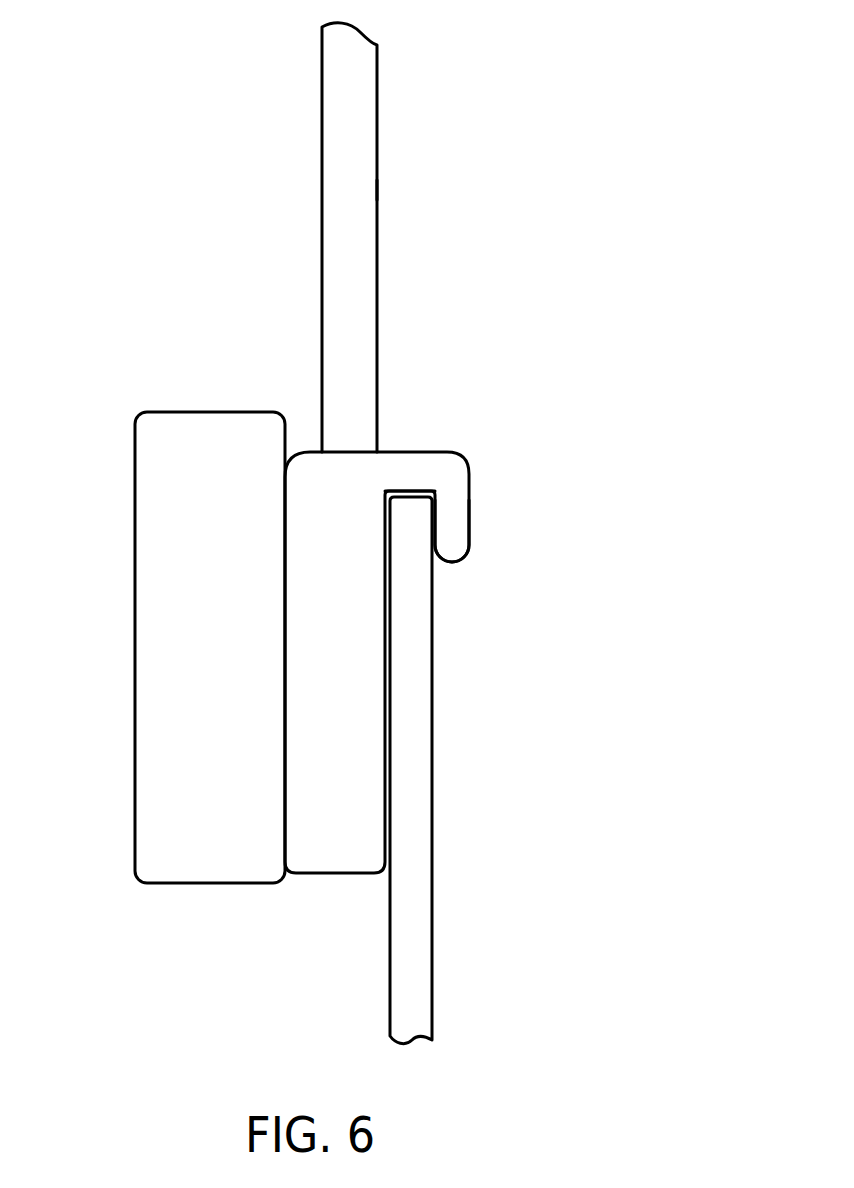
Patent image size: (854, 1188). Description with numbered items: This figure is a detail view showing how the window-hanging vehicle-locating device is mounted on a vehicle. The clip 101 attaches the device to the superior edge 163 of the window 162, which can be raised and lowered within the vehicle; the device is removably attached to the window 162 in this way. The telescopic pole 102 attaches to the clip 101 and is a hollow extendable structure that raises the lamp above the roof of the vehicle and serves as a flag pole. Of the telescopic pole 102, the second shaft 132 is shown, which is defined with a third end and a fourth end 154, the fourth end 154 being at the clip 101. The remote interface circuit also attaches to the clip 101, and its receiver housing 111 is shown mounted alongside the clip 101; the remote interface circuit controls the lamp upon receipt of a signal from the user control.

The clip 101 is at (436, 508).
The telescopic pole 102 is at (378, 190).
The receiver housing 111 is at (202, 858).
The second shaft 132 is at (347, 137).
The fourth end 154 is at (358, 440).
The window 162 is at (420, 892).
The superior edge 163 is at (413, 512).